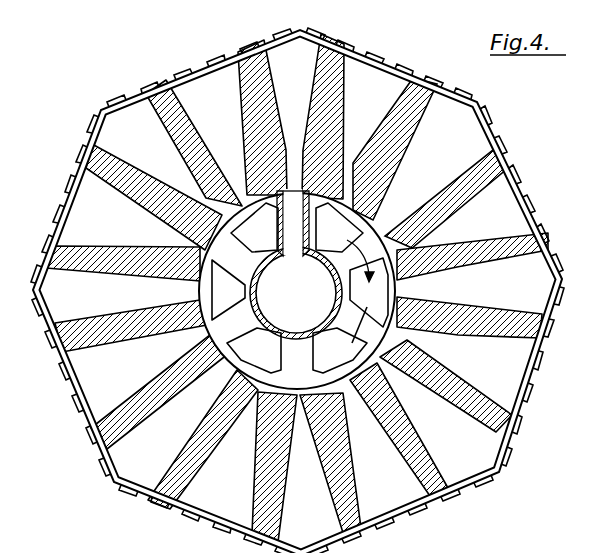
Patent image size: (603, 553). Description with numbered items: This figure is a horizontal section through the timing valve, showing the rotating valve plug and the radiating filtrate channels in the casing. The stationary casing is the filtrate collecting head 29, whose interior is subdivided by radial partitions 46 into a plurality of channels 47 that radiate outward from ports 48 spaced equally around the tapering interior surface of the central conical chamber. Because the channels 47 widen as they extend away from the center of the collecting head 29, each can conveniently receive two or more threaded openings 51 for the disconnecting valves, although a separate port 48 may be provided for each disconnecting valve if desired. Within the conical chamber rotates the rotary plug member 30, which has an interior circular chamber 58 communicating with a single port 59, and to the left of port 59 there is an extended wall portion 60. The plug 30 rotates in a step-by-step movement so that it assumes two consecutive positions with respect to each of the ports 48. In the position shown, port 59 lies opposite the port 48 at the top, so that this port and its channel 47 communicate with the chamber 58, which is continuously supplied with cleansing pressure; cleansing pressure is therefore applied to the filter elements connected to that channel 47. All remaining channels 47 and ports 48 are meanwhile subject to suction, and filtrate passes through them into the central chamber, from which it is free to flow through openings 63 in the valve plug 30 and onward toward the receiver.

The filtrate collecting head 29 is at (84, 153).
The rotary plug member 30 is at (233, 329).
The radial partitions 46 is at (493, 150).
The channels 47 is at (358, 22).
The ports 48 is at (337, 143).
The threaded openings 51 is at (360, 47).
The interior circular chamber 58 is at (296, 293).
The port 59 is at (294, 228).
The extended wall portion 60 is at (268, 205).
The openings 63 is at (278, 357).